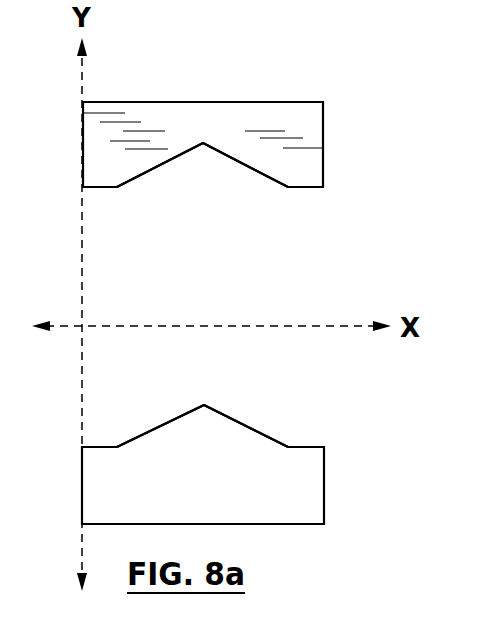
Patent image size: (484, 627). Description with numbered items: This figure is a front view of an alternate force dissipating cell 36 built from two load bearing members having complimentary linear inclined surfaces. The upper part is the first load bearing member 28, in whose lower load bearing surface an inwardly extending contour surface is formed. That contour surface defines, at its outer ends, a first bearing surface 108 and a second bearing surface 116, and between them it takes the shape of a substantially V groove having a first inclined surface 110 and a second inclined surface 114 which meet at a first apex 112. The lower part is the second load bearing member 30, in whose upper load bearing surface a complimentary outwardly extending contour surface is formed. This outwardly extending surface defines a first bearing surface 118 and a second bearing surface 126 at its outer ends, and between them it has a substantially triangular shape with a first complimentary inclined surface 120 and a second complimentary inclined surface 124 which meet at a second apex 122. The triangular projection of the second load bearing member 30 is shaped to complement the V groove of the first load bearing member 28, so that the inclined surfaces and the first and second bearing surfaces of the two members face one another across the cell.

The first load bearing member 28 is at (323, 101).
The second load bearing member 30 is at (323, 524).
The force dissipating cell 36 is at (256, 76).
The first bearing surface 108 is at (88, 189).
The first inclined surface 110 is at (143, 175).
The first apex 112 is at (198, 146).
The second inclined surface 114 is at (260, 178).
The second bearing surface 116 is at (308, 189).
The first bearing surface 118 is at (115, 446).
The first complimentary inclined surface 120 is at (168, 421).
The second apex 122 is at (205, 404).
The second complimentary inclined surface 124 is at (243, 420).
The second bearing surface 126 is at (310, 446).